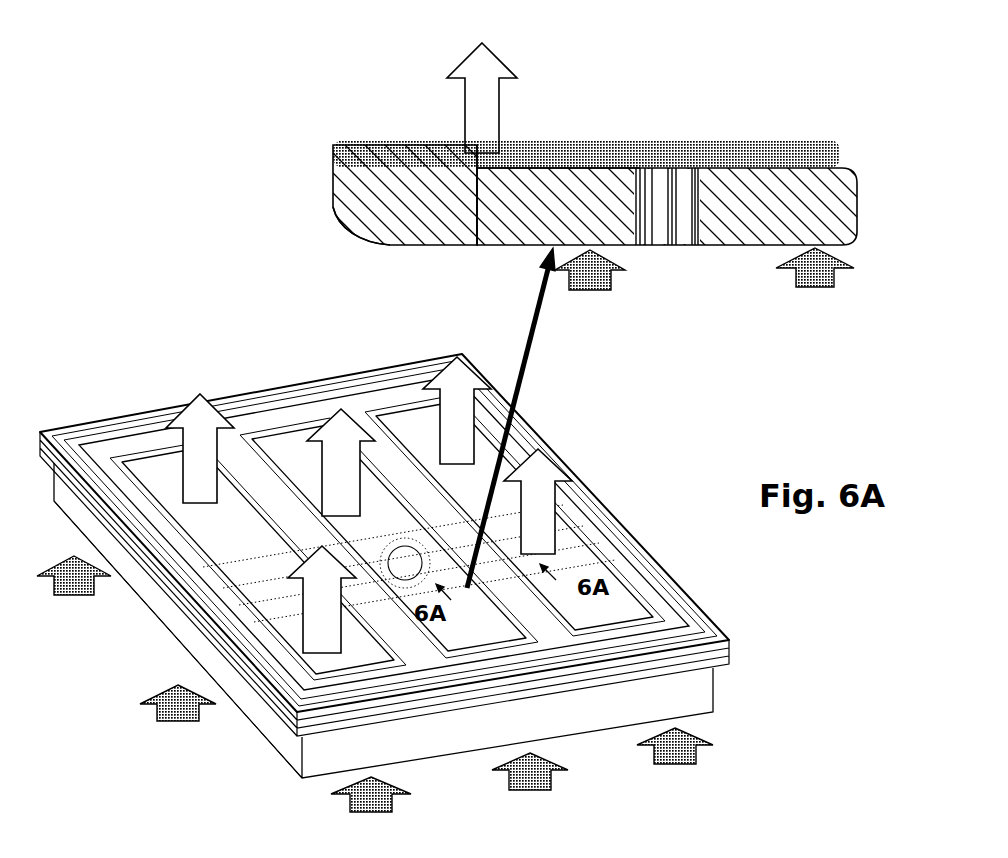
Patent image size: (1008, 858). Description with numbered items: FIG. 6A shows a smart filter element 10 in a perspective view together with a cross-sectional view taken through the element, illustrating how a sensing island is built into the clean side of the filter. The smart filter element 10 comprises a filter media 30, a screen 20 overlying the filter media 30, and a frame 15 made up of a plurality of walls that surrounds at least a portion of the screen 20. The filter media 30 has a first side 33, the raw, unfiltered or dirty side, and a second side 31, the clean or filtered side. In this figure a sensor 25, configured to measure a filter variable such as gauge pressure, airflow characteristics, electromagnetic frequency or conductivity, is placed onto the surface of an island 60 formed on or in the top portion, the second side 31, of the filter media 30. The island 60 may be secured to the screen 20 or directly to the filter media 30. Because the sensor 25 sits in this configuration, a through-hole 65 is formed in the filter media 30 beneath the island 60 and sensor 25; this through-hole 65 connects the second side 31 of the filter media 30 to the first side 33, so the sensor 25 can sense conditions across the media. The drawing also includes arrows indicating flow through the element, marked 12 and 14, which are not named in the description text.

The smart filter element 10 is at (604, 456).
The airflow (arrows) 12 is at (817, 270).
The airflow exiting (arrows) 14 is at (480, 92).
The frame 15 is at (46, 430).
The screen 20 is at (577, 610).
The sensor 25 is at (660, 158).
The filter media 30 is at (401, 127).
The second side 31 is at (728, 153).
The first side 33 is at (418, 237).
The island 60 is at (622, 163).
The through-hole 65 is at (670, 217).